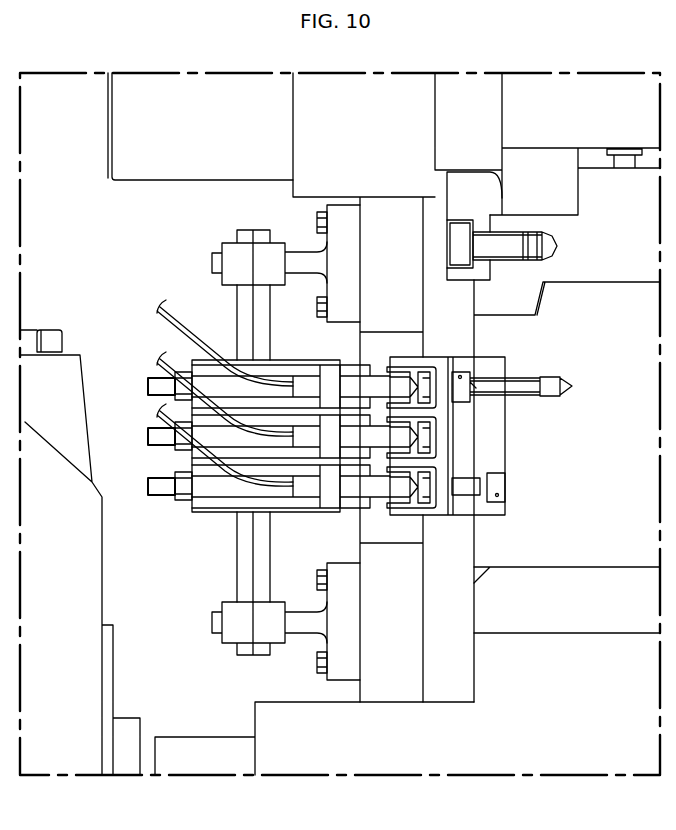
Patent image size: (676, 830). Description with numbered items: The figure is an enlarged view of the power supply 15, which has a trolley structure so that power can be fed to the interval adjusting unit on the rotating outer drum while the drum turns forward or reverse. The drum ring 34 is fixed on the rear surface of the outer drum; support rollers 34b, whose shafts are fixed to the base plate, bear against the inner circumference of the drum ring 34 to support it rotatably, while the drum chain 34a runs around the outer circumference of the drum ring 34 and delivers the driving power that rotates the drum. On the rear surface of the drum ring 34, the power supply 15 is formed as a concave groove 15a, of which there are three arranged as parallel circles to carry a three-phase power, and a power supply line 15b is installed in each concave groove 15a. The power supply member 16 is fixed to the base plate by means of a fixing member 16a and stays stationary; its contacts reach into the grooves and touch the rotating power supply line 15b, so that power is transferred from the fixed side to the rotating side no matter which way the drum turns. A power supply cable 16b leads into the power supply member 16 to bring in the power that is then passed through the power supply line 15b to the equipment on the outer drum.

The power supply 15 is at (189, 533).
The concave groove 15a is at (432, 515).
The power supply line 15b is at (413, 515).
The power supply member 16 is at (287, 357).
The fixing member 16a is at (208, 227).
The power supply cable 16b is at (170, 320).
The drum ring 34 is at (570, 546).
The drum chain 34a is at (525, 613).
The support roller 34b is at (122, 136).